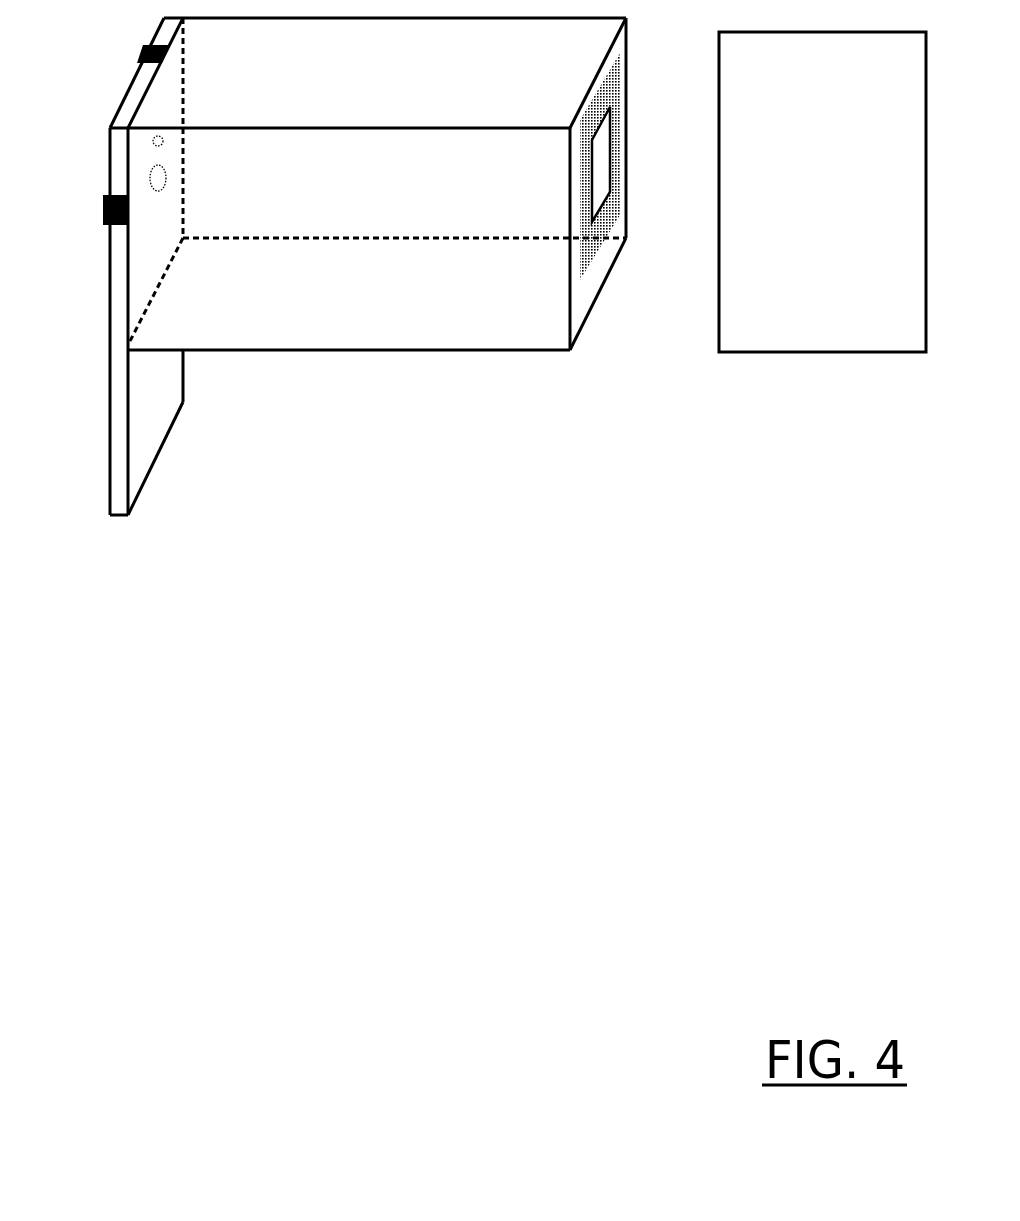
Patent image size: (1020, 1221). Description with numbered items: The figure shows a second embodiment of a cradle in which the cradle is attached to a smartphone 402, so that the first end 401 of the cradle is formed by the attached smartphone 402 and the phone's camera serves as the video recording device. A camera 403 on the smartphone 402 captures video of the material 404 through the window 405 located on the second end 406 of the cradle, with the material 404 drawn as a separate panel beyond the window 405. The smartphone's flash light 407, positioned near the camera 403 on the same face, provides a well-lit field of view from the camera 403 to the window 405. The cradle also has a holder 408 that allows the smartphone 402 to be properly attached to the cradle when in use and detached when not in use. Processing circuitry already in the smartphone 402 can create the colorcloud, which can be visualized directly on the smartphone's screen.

The first end of the cradle 401 is at (157, 233).
The smartphone 402 is at (147, 428).
The camera 403 is at (155, 178).
The material 404 is at (747, 243).
The window 405 is at (602, 170).
The second end 406 is at (578, 297).
The flash light 407 is at (153, 141).
The holder 408 is at (146, 52).